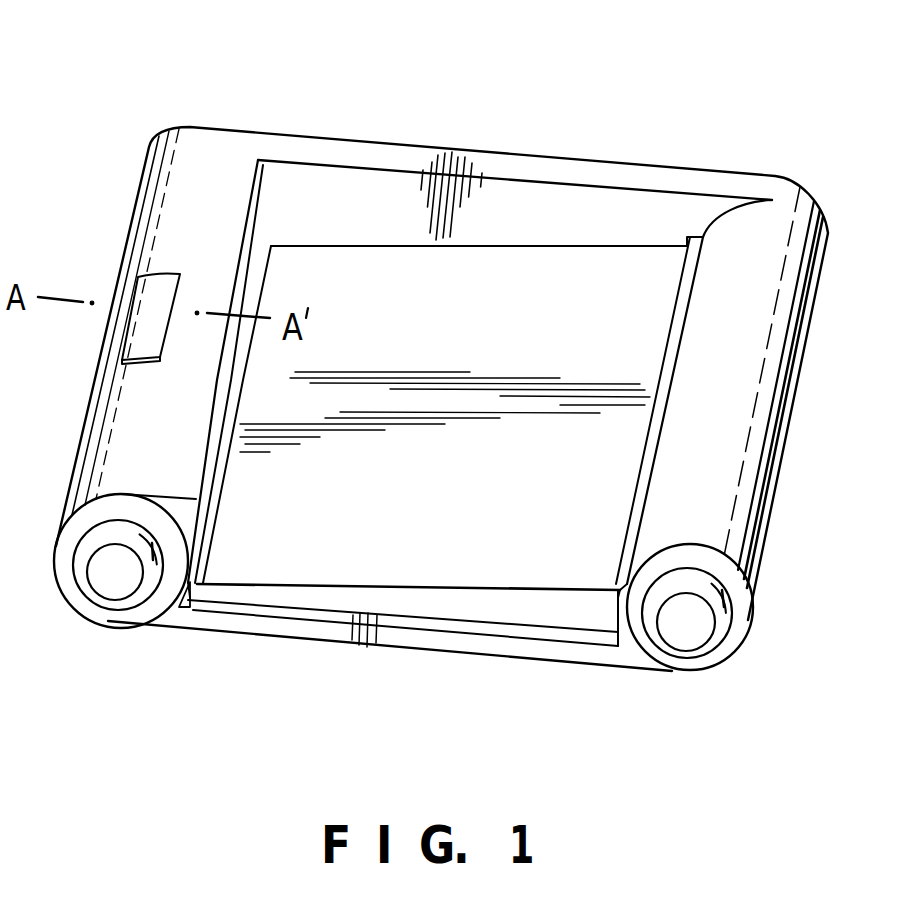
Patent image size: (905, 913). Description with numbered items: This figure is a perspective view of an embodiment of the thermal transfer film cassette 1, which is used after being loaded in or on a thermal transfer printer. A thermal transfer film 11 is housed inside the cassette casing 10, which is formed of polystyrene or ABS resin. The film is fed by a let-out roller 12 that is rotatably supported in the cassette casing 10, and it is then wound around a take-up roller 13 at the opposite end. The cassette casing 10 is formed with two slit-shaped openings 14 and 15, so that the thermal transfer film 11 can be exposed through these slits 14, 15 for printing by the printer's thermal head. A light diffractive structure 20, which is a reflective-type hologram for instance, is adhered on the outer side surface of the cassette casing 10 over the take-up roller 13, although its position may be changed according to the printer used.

The thermal transfer film cassette 1 is at (462, 125).
The cassette casing 10 is at (157, 187).
The thermal transfer film 11 is at (558, 262).
The let-out roller 12 is at (680, 652).
The take-up roller 13 is at (110, 606).
The slit-shaped opening 14 is at (617, 602).
The slit-shaped opening 15 is at (189, 604).
The light diffractive structure 20 is at (137, 328).